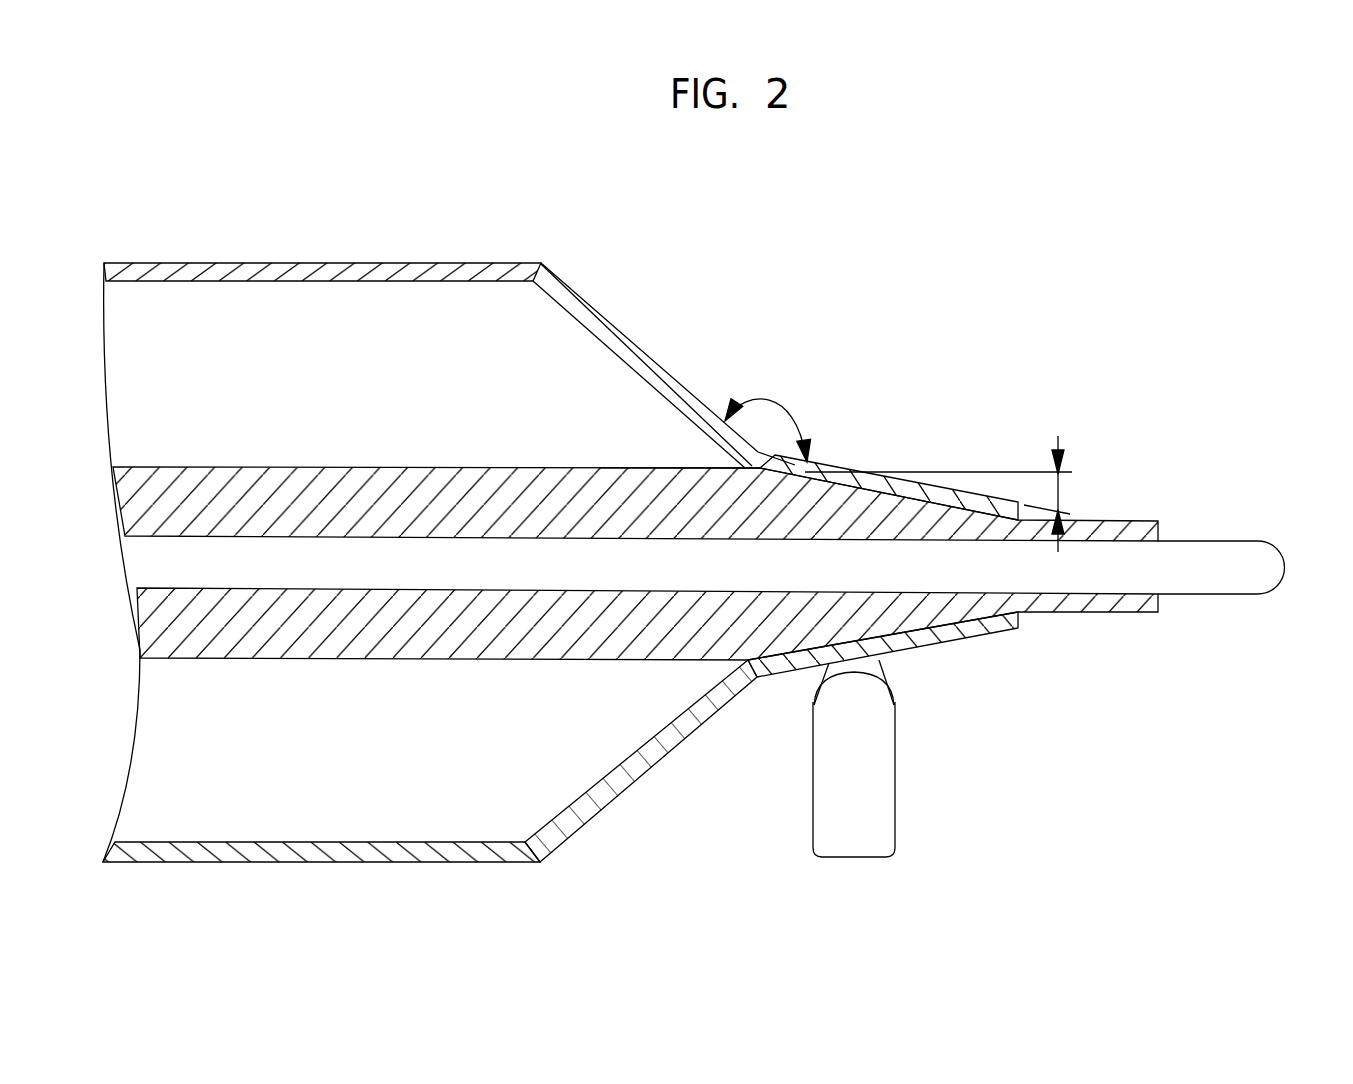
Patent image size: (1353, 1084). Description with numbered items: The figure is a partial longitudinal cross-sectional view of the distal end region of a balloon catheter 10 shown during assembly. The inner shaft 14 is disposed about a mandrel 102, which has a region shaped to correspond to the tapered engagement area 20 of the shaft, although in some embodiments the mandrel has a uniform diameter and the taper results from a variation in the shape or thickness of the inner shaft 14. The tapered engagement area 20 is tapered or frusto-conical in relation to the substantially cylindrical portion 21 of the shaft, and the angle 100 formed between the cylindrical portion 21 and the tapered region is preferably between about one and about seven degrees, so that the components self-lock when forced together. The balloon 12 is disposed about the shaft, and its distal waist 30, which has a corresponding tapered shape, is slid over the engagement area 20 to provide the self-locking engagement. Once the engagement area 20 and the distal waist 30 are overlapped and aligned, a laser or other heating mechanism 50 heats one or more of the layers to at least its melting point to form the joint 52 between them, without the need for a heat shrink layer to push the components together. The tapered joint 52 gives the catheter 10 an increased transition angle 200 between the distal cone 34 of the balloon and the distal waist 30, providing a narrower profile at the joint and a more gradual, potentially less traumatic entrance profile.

The catheter 10 is at (853, 320).
The balloon 12 is at (405, 264).
The inner shaft 14 is at (475, 675).
The tapered engagement area 20 is at (833, 482).
The substantially cylindrical portion 21 is at (668, 468).
The distal waist 30 is at (945, 645).
The distal cone 34 is at (592, 310).
The heating mechanism 50 is at (880, 777).
The joint 52 is at (905, 492).
The angle 100 is at (1072, 492).
The mandrel 102 is at (628, 580).
The transition angle 200 is at (785, 402).